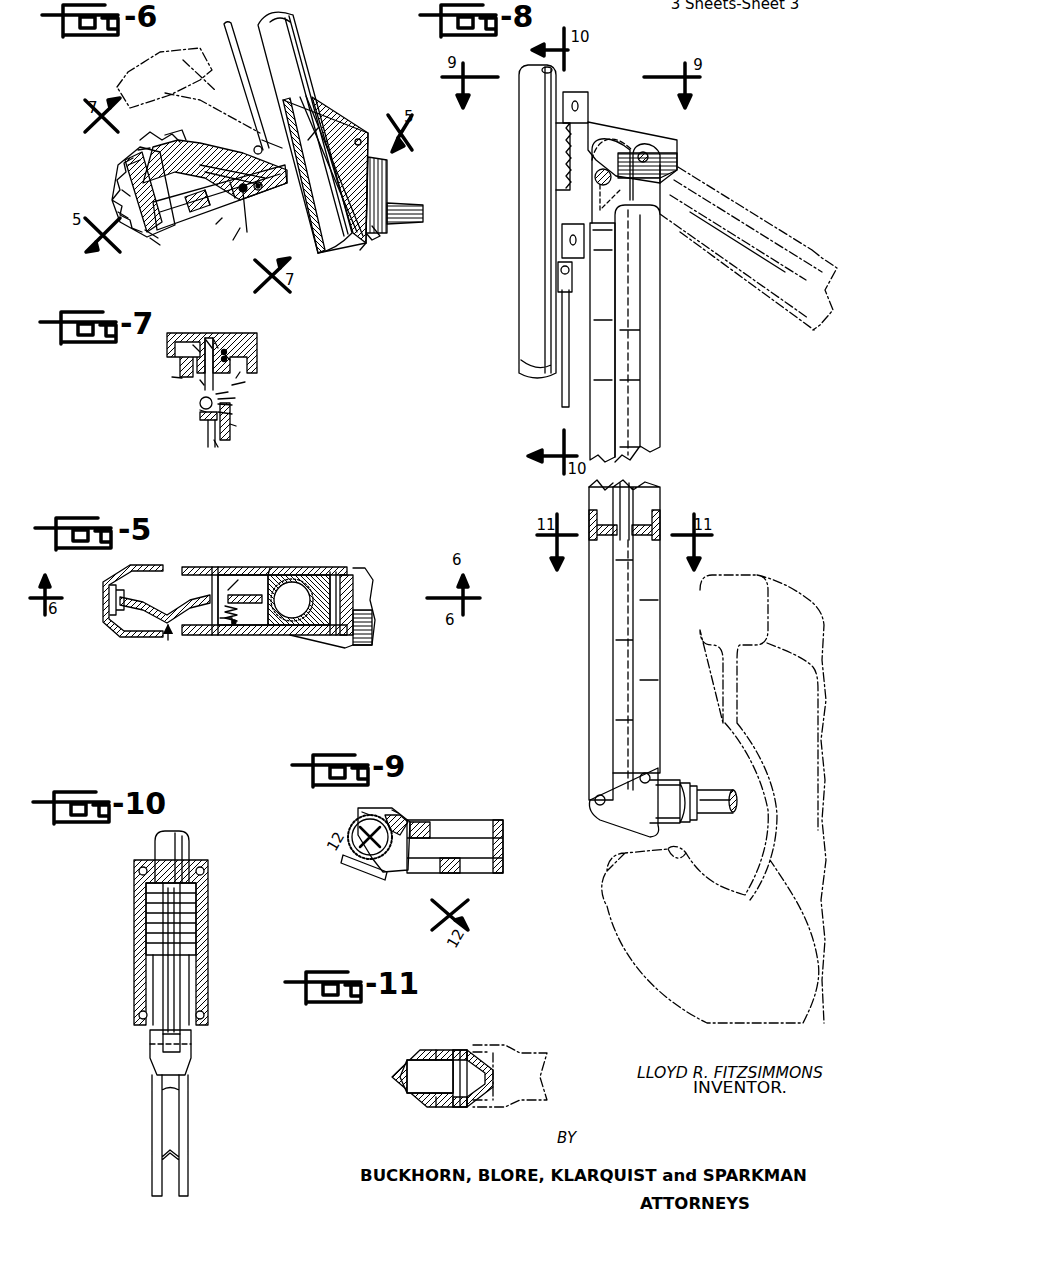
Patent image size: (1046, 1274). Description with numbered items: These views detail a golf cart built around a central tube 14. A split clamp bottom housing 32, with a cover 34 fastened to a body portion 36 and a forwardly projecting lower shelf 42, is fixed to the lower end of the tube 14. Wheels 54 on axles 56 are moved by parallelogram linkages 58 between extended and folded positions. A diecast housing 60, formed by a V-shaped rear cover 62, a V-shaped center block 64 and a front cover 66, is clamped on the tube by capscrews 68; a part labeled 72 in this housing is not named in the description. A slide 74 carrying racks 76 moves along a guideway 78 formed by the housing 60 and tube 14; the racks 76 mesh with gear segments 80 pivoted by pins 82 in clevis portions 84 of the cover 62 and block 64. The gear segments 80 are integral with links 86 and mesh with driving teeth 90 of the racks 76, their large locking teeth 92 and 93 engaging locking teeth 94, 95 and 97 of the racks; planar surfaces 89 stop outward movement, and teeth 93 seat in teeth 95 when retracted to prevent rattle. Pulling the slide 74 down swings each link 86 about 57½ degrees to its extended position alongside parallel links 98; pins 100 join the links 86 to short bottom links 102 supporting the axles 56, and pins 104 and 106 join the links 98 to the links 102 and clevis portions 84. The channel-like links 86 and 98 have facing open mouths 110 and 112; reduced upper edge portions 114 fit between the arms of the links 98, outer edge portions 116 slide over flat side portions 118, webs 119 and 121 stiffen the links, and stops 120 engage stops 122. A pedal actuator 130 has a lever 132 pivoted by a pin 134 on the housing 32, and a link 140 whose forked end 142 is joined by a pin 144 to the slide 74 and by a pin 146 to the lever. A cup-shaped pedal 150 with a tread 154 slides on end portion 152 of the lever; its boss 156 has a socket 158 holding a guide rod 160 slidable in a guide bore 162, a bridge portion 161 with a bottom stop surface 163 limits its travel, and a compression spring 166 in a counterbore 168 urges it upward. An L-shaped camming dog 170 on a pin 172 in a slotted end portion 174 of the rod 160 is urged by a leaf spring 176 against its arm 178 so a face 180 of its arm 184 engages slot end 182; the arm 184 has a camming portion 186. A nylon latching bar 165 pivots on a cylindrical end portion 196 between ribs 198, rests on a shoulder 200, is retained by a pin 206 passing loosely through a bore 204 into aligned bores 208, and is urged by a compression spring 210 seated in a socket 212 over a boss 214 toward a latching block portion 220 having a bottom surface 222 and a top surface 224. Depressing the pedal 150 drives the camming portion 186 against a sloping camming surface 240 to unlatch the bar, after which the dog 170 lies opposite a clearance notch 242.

In FIG. 6, the tube 14 is at (305, 132).
In FIG. 5, the tube 14 is at (290, 636).
In FIG. 10, the tube 14 is at (192, 847).
In FIG. 9, the tube 14 is at (350, 835).
In FIG. 8, the tube 14 is at (522, 72).
In FIG. 6, the bottom housing 32 is at (385, 236).
In FIG. 5, the bottom housing 32 is at (362, 612).
In FIG. 6, the cover 34 is at (300, 224).
In FIG. 5, the cover 34 is at (284, 574).
In FIG. 6, the body portion 36 is at (388, 166).
In FIG. 5, the body portion 36 is at (328, 574).
In FIG. 6, the lower shelf 42 is at (410, 226).
In FIG. 5, the lower shelf 42 is at (366, 634).
In FIG. 8, the wheels 54 is at (714, 875).
In FIG. 8, the axles 56 is at (730, 806).
In FIG. 8, the angle 57 1/2 degrees 57 is at (662, 345).
In FIG. 8, the parallelogram linkages 58 is at (735, 186).
In FIG. 10, the split clamp housing 60 is at (212, 927).
In FIG. 9, the split clamp housing 60 is at (383, 887).
In FIG. 9, the rear cover 62 is at (350, 870).
In FIG. 8, the rear cover 62 is at (677, 150).
In FIG. 10, the center block 64 is at (150, 949).
In FIG. 9, the center block 64 is at (420, 870).
In FIG. 9, the front cover 66 is at (440, 830).
In FIG. 10, the capscrews 68 is at (143, 865).
In FIG. 9, the capscrews 68 is at (414, 820).
In FIG. 10, the cavity 72 is at (150, 997).
In FIG. 10, the slide 74 is at (172, 1007).
In FIG. 9, the slide 74 is at (350, 825).
In FIG. 8, the slide 74 is at (562, 239).
In FIG. 10, the racks 76 is at (154, 968).
In FIG. 9, the racks 76 is at (362, 812).
In FIG. 8, the racks 76 is at (556, 171).
In FIG. 10, the guideway 78 is at (196, 893).
In FIG. 9, the guideway 78 is at (400, 875).
In FIG. 8, the guideway 78 is at (556, 160).
In FIG. 8, the gear segments 80 is at (572, 108).
In FIG. 8, the pins 82 is at (606, 186).
In FIG. 9, the clevis portions 84 is at (480, 868).
In FIG. 8, the clevis portions 84 is at (640, 130).
In FIG. 11, the links 86 is at (400, 1058).
In FIG. 8, the links 86 is at (737, 275).
In FIG. 10, the planar surfaces 89 is at (150, 902).
In FIG. 10, the driving teeth 90 is at (150, 924).
In FIG. 8, the driving teeth 90 is at (556, 146).
In FIG. 8, the locking teeth 92 is at (590, 135).
In FIG. 8, the locking teeth 93 is at (556, 181).
In FIG. 10, the locking teeth 94 is at (199, 905).
In FIG. 8, the locking teeth 94 is at (556, 132).
In FIG. 10, the locking teeth 95 is at (150, 934).
In FIG. 8, the locking teeth 95 is at (612, 124).
In FIG. 10, the locking teeth 97 is at (154, 960).
In FIG. 11, the links 98 is at (478, 1050).
In FIG. 8, the links 98 is at (758, 208).
In FIG. 8, the pins 100 is at (598, 812).
In FIG. 8, the bottom links 102 is at (650, 826).
In FIG. 8, the pins 104 is at (652, 776).
In FIG. 8, the pins 106 is at (650, 152).
In FIG. 11, the open mouth 110 is at (520, 1046).
In FIG. 11, the open mouth 112 is at (425, 1100).
In FIG. 11, the reduced upper edge portions 114 is at (462, 1055).
In FIG. 11, the outer edge portions 116 is at (440, 1050).
In FIG. 11, the flat side portions 118 is at (432, 1050).
In FIG. 11, the webs 119 is at (405, 1078).
In FIG. 8, the webs 119 is at (636, 492).
In FIG. 11, the stops 120 is at (450, 1050).
In FIG. 11, the webs 121 is at (490, 1090).
In FIG. 8, the webs 121 is at (652, 526).
In FIG. 11, the stops 122 is at (452, 1092).
In FIG. 6, the pedal actuator 130 is at (178, 44).
In FIG. 7, the pedal actuator 130 is at (275, 333).
In FIG. 5, the pedal actuator 130 is at (80, 598).
In FIG. 6, the lever 132 is at (200, 142).
In FIG. 7, the lever 132 is at (245, 382).
In FIG. 5, the lever 132 is at (300, 567).
In FIG. 6, the pin 134 is at (360, 135).
In FIG. 5, the pin 134 is at (325, 636).
In FIG. 6, the link 140 is at (242, 101).
In FIG. 10, the link 140 is at (188, 1176).
In FIG. 8, the link 140 is at (561, 397).
In FIG. 10, the forked end 142 is at (188, 1057).
In FIG. 8, the forked end 142 is at (557, 283).
In FIG. 10, the pin 144 is at (194, 1044).
In FIG. 8, the pin 144 is at (560, 270).
In FIG. 6, the pin 146 is at (252, 142).
In FIG. 6, the pedal 150 is at (175, 133).
In FIG. 7, the pedal 150 is at (168, 350).
In FIG. 6, the end portion 152 is at (118, 212).
In FIG. 7, the end portion 152 is at (172, 377).
In FIG. 6, the tread 154 is at (128, 165).
In FIG. 7, the tread 154 is at (208, 335).
In FIG. 6, the boss 156 is at (155, 142).
In FIG. 7, the boss 156 is at (195, 338).
In FIG. 7, the socket 158 is at (217, 335).
In FIG. 6, the guide rod 160 is at (112, 177).
In FIG. 7, the guide rod 160 is at (228, 346).
In FIG. 6, the bridge portion 161 is at (122, 190).
In FIG. 7, the bridge portion 161 is at (240, 372).
In FIG. 7, the guide bore 162 is at (200, 380).
In FIG. 6, the bottom stop surface 163 is at (148, 228).
In FIG. 6, the latching bar 165 is at (216, 224).
In FIG. 7, the latching bar 165 is at (218, 447).
In FIG. 5, the latching bar 165 is at (168, 640).
In FIG. 6, the compression spring 166 is at (138, 150).
In FIG. 7, the compression spring 166 is at (228, 352).
In FIG. 7, the counterbore 168 is at (228, 358).
In FIG. 7, the camming dog 170 is at (205, 418).
In FIG. 7, the pin 172 is at (205, 420).
In FIG. 7, the slotted end portion 174 is at (200, 402).
In FIG. 7, the leaf spring 176 is at (200, 410).
In FIG. 7, the arm 178 is at (210, 432).
In FIG. 7, the face 180 is at (235, 398).
In FIG. 7, the end 182 is at (228, 392).
In FIG. 7, the arm 184 is at (232, 405).
In FIG. 7, the camming portion 186 is at (232, 436).
In FIG. 6, the cylindrical end portion 196 is at (152, 242).
In FIG. 5, the cylindrical end portion 196 is at (136, 598).
In FIG. 5, the ribs 198 is at (112, 592).
In FIG. 6, the shoulder 200 is at (174, 236).
In FIG. 6, the bore 204 is at (247, 232).
In FIG. 5, the bore 204 is at (233, 598).
In FIG. 6, the pin 206 is at (233, 240).
In FIG. 5, the pin 206 is at (238, 580).
In FIG. 5, the aligned bores 208 is at (216, 568).
In FIG. 6, the compression spring 210 is at (240, 177).
In FIG. 5, the compression spring 210 is at (218, 636).
In FIG. 5, the socket 212 is at (236, 612).
In FIG. 5, the boss 214 is at (236, 633).
In FIG. 6, the latching block portion 220 is at (268, 136).
In FIG. 5, the latching block portion 220 is at (350, 594).
In FIG. 6, the bottom surface 222 is at (258, 196).
In FIG. 6, the top surface 224 is at (318, 128).
In FIG. 7, the camming surface 240 is at (232, 414).
In FIG. 7, the clearance notch 242 is at (236, 426).
In FIG. 5, the clearance notch 242 is at (172, 606).